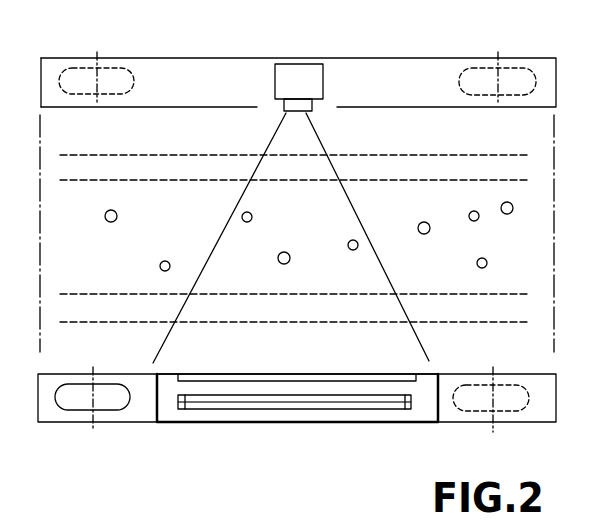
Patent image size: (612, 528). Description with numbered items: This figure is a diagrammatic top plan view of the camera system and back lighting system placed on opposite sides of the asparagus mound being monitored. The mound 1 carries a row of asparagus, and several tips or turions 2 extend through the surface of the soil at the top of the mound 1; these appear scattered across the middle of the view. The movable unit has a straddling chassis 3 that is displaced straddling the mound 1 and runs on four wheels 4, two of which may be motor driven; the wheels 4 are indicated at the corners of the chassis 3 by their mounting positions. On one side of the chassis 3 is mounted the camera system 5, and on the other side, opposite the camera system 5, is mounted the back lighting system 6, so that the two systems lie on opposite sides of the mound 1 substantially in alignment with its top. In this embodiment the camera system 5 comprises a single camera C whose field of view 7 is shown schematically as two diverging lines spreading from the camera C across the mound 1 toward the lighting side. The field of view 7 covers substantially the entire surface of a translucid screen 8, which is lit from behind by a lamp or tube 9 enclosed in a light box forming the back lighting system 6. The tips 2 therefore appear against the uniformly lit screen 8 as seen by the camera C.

The mound 1 is at (478, 170).
The tips or turions 2 is at (476, 262).
The straddling chassis 3 is at (197, 58).
The wheels 4 is at (72, 70).
The camera system 5 is at (324, 74).
The back lighting system 6 is at (275, 415).
The field of view 7 is at (315, 137).
The translucid screen 8 is at (233, 380).
The lamp or tube 9 is at (335, 398).
The camera C is at (288, 88).